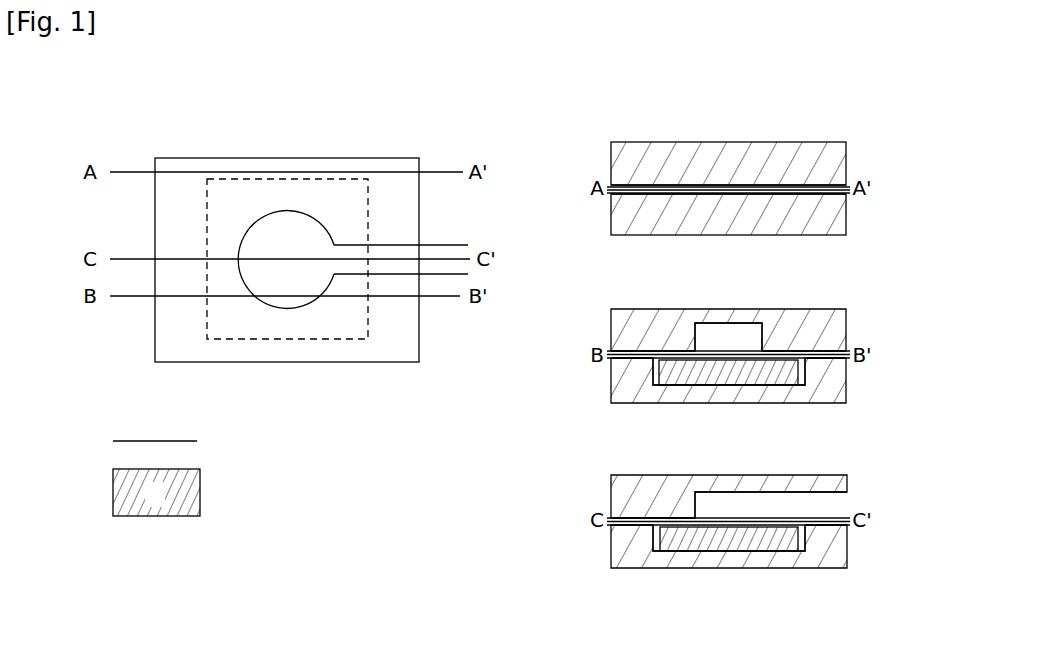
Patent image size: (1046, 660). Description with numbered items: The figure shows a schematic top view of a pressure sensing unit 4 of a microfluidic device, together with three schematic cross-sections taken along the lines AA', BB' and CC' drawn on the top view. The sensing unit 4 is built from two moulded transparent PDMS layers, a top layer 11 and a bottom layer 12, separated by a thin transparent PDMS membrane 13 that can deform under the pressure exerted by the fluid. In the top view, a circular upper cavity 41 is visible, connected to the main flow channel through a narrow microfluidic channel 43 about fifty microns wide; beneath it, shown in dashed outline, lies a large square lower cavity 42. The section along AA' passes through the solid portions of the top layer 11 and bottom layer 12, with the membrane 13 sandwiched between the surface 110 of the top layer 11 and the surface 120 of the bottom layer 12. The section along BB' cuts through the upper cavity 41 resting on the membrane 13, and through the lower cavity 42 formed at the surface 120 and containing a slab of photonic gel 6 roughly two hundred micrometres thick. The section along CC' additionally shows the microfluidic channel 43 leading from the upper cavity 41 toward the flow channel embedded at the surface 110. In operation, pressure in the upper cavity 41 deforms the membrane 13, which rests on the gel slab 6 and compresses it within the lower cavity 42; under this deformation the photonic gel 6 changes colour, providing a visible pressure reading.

The sensing unit 4 is at (316, 138).
The circular upper cavity 41 is at (275, 250).
The lower cavity 42 is at (338, 327).
The microfluidic channel 43 is at (433, 267).
The membrane 13 is at (130, 438).
The photonic gel 6 is at (149, 504).
The top layer 11 is at (655, 175).
The bottom layer 12 is at (655, 224).
The surface of the top layer 110 is at (794, 183).
The surface of the bottom layer 120 is at (810, 195).